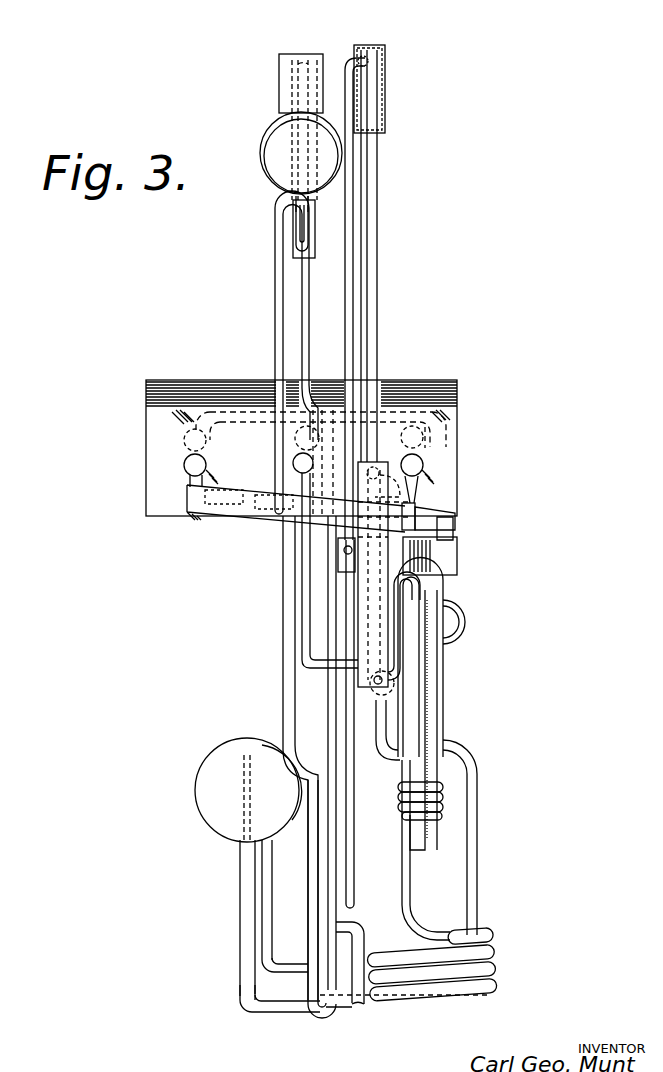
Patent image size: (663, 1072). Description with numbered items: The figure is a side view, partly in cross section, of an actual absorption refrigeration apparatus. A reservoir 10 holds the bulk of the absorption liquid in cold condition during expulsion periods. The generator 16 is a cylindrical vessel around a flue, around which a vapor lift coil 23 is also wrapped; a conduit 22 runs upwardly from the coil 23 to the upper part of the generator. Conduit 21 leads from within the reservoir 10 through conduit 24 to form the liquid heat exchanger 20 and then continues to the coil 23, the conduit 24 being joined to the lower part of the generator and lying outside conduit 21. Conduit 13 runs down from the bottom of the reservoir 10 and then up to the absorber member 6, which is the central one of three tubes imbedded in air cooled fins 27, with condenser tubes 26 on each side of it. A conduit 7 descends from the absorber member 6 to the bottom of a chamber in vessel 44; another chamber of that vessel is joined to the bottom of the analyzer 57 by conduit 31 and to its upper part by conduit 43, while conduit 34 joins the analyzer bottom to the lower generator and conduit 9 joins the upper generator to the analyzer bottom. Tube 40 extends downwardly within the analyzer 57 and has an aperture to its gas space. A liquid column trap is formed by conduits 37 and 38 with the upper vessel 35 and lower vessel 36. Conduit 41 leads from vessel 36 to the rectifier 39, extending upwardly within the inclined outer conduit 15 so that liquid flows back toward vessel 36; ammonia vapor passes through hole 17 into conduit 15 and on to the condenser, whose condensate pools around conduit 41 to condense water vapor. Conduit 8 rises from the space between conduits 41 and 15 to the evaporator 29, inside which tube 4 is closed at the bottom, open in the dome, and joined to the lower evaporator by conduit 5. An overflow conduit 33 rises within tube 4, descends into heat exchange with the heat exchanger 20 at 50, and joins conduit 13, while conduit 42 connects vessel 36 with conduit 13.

The tube 4 is at (293, 247).
The conduit 5 is at (294, 203).
The absorber member 6 is at (300, 455).
The conduit 7 is at (305, 556).
The conduit 8 is at (275, 272).
The conduit 9 is at (403, 593).
The reservoir 10 is at (226, 757).
The conduit 13 is at (336, 861).
The outer conduit 15 is at (192, 512).
The generator 16 is at (428, 706).
The hole 17 is at (226, 500).
The liquid heat exchanger 20 is at (460, 1002).
The conduit 21 is at (243, 788).
The conduit 22 is at (420, 667).
The vapor lift coil 23 is at (446, 798).
The conduit 24 is at (467, 878).
The condenser tubes 26 is at (424, 447).
The fins 27 is at (432, 488).
The evaporator 29 is at (284, 141).
The conduit 31 is at (378, 689).
The overflow or drain conduit 33 is at (313, 888).
The conduit 34 is at (376, 723).
The upper vessel 35 is at (385, 99).
The lower vessel 36 is at (446, 556).
The conduit 37 is at (355, 192).
The conduit 38 is at (357, 60).
The rectifier 39 is at (268, 512).
The tube 40 is at (368, 272).
The conduit 41 is at (450, 532).
The conduit 42 is at (352, 792).
The conduit 43 is at (454, 517).
The vessel 44 is at (458, 616).
The heat exchange location 50 is at (365, 948).
The analyzer 57 is at (375, 494).